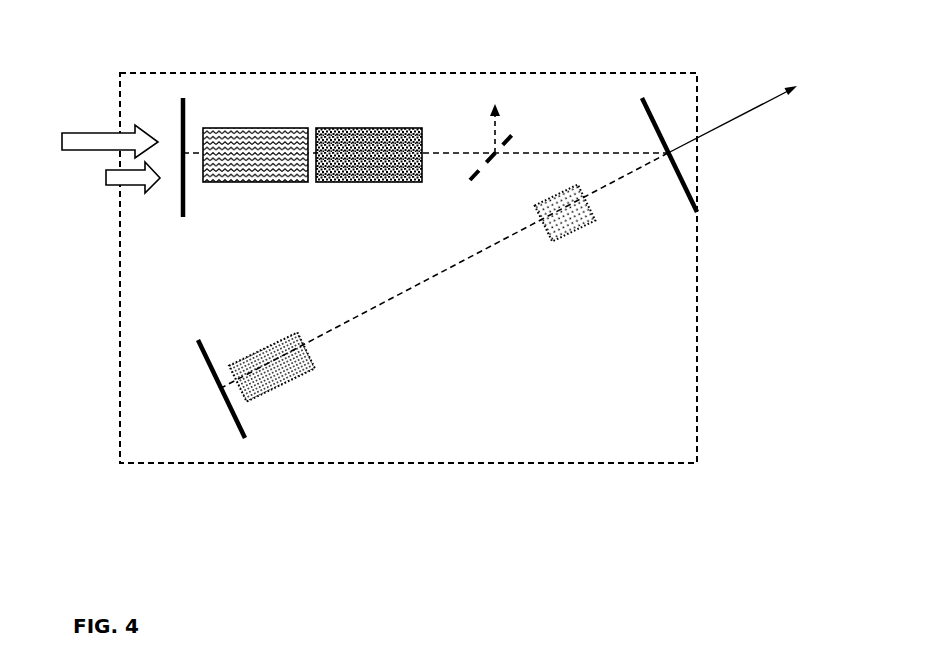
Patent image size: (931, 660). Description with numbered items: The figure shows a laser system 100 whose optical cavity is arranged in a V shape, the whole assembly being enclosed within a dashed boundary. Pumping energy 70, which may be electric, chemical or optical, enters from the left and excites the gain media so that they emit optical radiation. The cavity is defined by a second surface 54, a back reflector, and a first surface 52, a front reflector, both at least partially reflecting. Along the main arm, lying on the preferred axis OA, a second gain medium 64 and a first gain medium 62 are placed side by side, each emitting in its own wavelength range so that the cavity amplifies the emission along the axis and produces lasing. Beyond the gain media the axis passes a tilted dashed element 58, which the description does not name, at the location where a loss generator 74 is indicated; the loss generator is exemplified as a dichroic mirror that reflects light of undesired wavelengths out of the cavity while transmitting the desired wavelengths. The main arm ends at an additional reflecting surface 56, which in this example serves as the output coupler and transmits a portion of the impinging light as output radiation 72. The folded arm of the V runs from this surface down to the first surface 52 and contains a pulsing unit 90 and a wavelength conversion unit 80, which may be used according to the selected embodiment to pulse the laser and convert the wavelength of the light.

The laser system 100 is at (590, 54).
The preferred axis OA is at (440, 150).
The pumping energy 70 is at (111, 159).
The second surface 54 is at (182, 108).
The second gain medium 64 is at (235, 137).
The first gain medium 62 is at (363, 140).
The tilted optical element (beam splitter) 58 is at (485, 173).
The loss generator 74 is at (513, 122).
The additional reflecting surface 56 is at (655, 113).
The output radiation 72 is at (732, 123).
The pulsing unit 90 is at (578, 228).
The wavelength conversion unit 80 is at (302, 373).
The first surface 52 is at (197, 338).